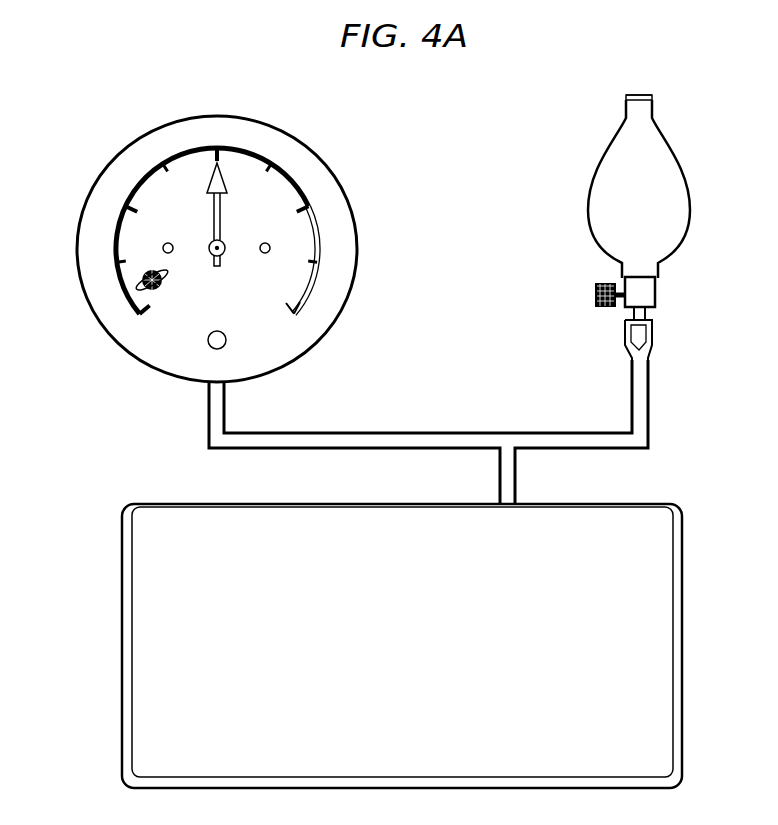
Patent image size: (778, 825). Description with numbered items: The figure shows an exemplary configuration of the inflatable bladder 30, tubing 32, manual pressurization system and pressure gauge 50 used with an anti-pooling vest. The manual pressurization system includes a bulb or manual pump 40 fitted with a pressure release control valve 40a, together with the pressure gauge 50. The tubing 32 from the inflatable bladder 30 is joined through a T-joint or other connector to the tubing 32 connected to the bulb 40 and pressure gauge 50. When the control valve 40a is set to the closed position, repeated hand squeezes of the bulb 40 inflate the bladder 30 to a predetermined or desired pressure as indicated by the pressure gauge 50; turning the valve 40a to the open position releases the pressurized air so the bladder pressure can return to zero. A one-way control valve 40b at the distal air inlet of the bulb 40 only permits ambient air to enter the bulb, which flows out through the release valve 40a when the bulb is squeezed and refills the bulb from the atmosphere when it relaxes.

The inflatable bladder 30 is at (122, 692).
The tubing 32 is at (405, 433).
The bulb or manual pump 40 is at (599, 174).
The pressure release control valve 40a is at (594, 295).
The one-way control valve 40b is at (652, 91).
The pressure gauge 50 is at (128, 147).